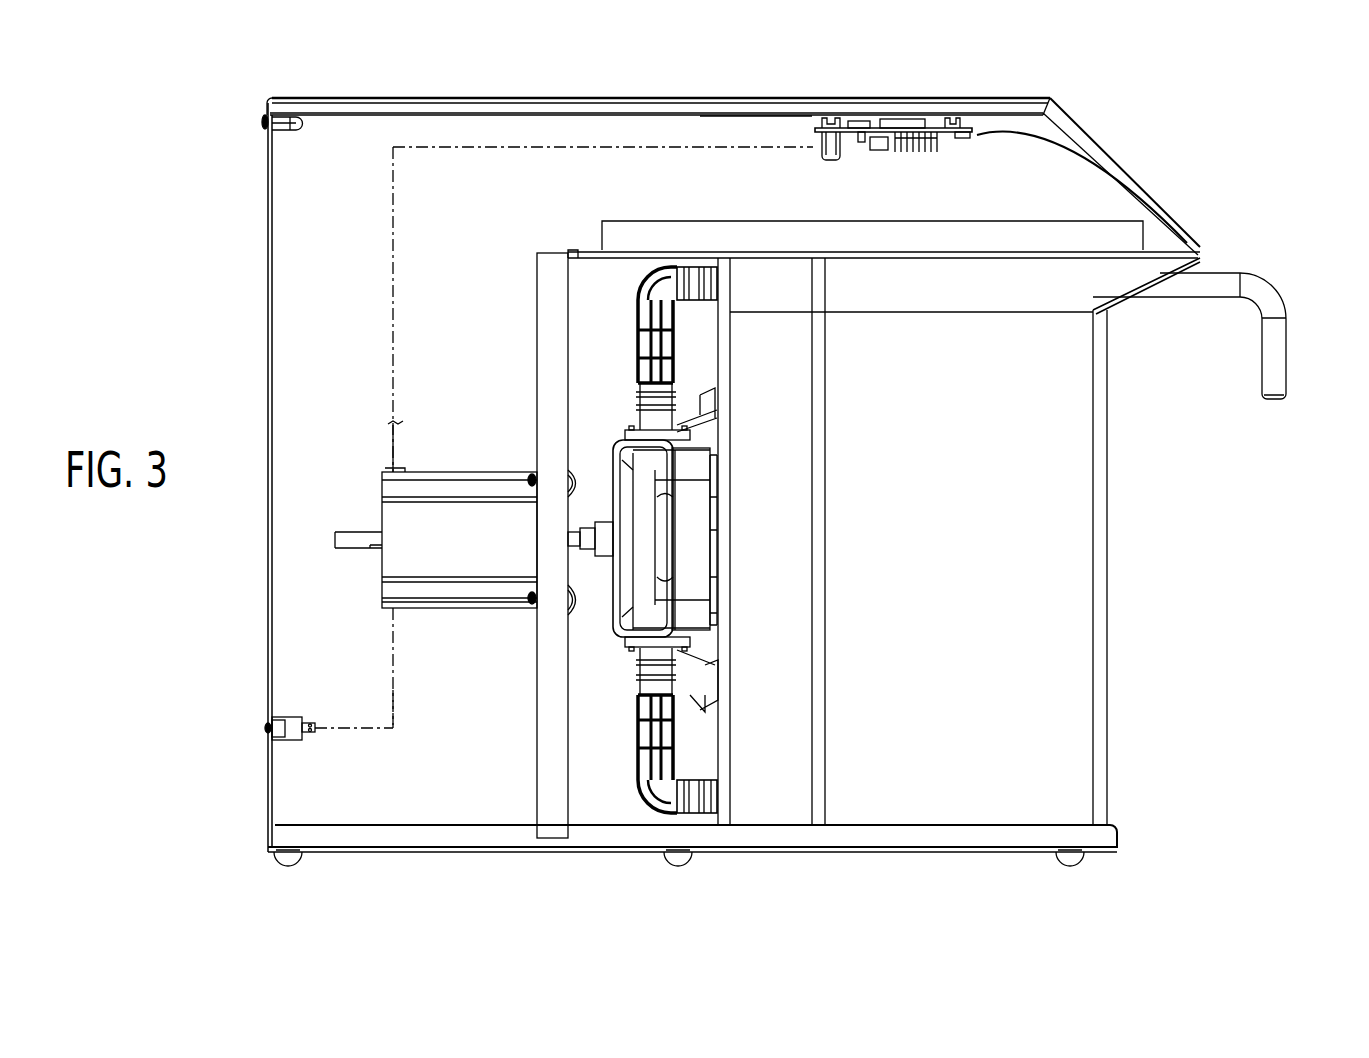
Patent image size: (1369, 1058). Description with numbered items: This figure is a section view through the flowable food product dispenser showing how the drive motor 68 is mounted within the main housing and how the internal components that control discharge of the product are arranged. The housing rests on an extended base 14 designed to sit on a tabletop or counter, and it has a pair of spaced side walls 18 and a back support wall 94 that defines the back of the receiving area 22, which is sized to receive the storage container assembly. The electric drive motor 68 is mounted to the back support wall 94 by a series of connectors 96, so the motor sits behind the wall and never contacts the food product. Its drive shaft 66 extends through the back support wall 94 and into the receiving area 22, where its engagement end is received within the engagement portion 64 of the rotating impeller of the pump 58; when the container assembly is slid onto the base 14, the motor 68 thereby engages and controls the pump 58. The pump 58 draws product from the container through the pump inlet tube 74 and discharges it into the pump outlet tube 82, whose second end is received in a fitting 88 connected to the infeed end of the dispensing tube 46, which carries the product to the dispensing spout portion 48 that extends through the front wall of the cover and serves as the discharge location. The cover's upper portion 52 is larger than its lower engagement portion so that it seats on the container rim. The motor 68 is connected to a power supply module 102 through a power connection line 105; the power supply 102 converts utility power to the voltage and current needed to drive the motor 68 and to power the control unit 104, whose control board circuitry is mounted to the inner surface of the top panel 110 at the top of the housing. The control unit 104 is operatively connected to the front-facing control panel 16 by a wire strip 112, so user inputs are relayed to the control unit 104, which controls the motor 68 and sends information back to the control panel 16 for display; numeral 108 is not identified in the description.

The extended base 14 is at (840, 845).
The control panel 16 is at (1128, 172).
The side walls 18 is at (284, 312).
The receiving area 22 is at (586, 262).
The dispensing tube 46 is at (1212, 276).
The dispensing spout portion 48 is at (1282, 356).
The upper portion 52 is at (625, 445).
The pump 58 is at (703, 522).
The engagement portion 64 is at (596, 560).
The drive shaft 66 is at (578, 530).
The drive motor 68 is at (458, 551).
The pump inlet tube 74 is at (643, 737).
The pump outlet tube 82 is at (643, 318).
The fitting 88 is at (710, 306).
The back support wall 94 is at (563, 333).
The connectors 96 is at (565, 625).
The power supply module 102 is at (288, 717).
The control unit 104 is at (857, 172).
The power connection line 105 is at (393, 700).
The cover underside 108 is at (743, 118).
The top panel 110 is at (661, 98).
The wire strip 112 is at (993, 133).